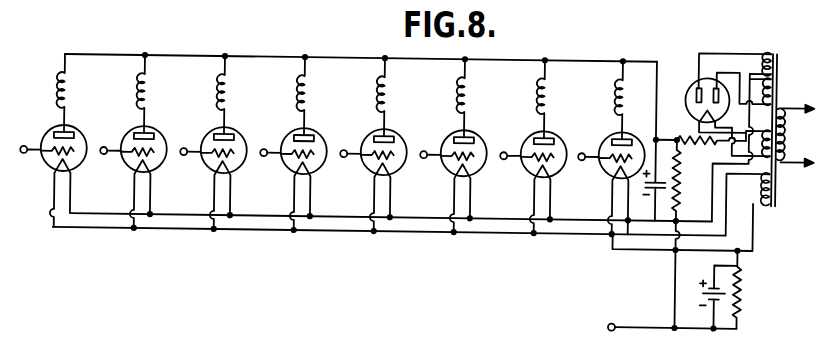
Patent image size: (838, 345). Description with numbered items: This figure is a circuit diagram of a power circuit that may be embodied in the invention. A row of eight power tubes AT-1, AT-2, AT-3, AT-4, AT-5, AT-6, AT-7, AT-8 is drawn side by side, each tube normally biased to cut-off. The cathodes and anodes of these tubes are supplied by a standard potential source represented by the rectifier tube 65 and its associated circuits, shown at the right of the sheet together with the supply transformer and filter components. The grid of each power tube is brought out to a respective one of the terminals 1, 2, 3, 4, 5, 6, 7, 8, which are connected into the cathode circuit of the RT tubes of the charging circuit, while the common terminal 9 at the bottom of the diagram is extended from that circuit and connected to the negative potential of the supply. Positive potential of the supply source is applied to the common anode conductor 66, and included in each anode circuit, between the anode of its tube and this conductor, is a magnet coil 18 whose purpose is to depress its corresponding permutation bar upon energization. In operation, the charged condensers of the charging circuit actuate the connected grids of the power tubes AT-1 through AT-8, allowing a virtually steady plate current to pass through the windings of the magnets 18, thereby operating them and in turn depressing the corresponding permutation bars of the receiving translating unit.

The terminal 1 is at (29, 159).
The terminal 2 is at (109, 160).
The terminal 3 is at (189, 161).
The terminal 4 is at (269, 162).
The terminal 5 is at (349, 163).
The terminal 6 is at (429, 164).
The terminal 7 is at (509, 165).
The terminal 8 is at (587, 166).
The common terminal 9 is at (606, 330).
The magnet coil 18 is at (71, 90).
The rectifier tube 65 is at (692, 76).
The common anode conductor 66 is at (658, 88).
The power tube AT-1 is at (53, 140).
The power tube AT-2 is at (133, 141).
The power tube AT-3 is at (213, 142).
The power tube AT-4 is at (293, 143).
The power tube AT-5 is at (373, 144).
The power tube AT-6 is at (453, 145).
The power tube AT-7 is at (533, 146).
The power tube AT-8 is at (611, 148).